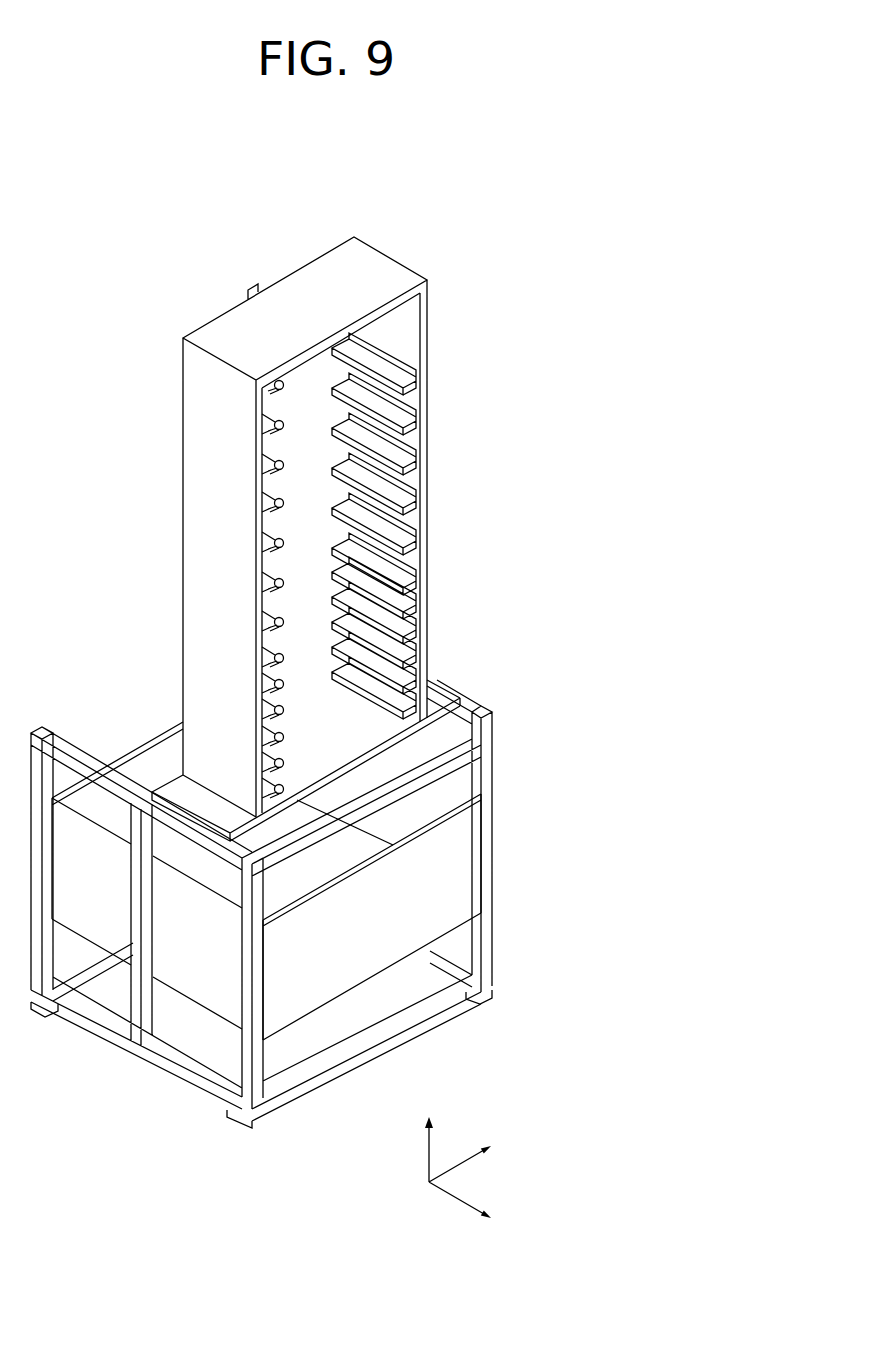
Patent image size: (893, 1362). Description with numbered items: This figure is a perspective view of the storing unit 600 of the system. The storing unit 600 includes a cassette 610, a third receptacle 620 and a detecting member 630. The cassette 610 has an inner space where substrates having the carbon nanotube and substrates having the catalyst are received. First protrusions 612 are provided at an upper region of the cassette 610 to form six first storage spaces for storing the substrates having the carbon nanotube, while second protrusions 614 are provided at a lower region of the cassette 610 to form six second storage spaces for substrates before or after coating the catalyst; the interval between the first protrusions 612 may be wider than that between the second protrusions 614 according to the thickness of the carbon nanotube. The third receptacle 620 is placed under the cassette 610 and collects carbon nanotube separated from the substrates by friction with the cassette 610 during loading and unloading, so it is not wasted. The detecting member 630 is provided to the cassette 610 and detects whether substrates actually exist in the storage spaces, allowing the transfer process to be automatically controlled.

The storing unit 600 is at (424, 232).
The cassette 610 is at (212, 551).
The first protrusions 612 is at (263, 465).
The second protrusions 614 is at (415, 626).
The third receptacle 620 is at (470, 858).
The detecting member 630 is at (266, 383).